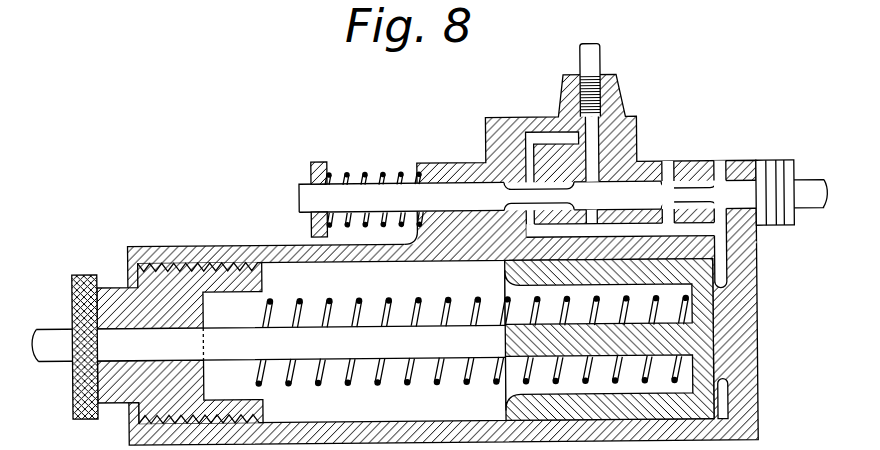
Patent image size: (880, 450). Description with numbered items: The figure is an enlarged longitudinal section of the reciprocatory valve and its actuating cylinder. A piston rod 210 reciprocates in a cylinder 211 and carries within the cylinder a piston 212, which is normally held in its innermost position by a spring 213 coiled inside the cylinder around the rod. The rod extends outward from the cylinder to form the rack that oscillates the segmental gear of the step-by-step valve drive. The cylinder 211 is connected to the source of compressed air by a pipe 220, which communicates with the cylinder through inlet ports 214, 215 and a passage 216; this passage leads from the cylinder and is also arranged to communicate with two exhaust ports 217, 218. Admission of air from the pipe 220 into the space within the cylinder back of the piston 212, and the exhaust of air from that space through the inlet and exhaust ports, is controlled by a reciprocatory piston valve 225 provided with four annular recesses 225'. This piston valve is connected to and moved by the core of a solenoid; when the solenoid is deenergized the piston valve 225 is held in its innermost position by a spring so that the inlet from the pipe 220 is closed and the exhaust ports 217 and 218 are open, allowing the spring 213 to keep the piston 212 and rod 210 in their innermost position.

The piston rod 210 is at (44, 330).
The cylinder 211 is at (274, 243).
The piston 212 is at (718, 324).
The spring 213 is at (420, 299).
The inlet port 214 is at (530, 145).
The inlet port 215 is at (594, 170).
The passage 216 is at (693, 236).
The exhaust port 217 is at (672, 160).
The exhaust port 218 is at (718, 168).
The pipe 220 is at (592, 44).
The reciprocatory piston valve 225 is at (528, 174).
The annular recesses 225' is at (610, 196).